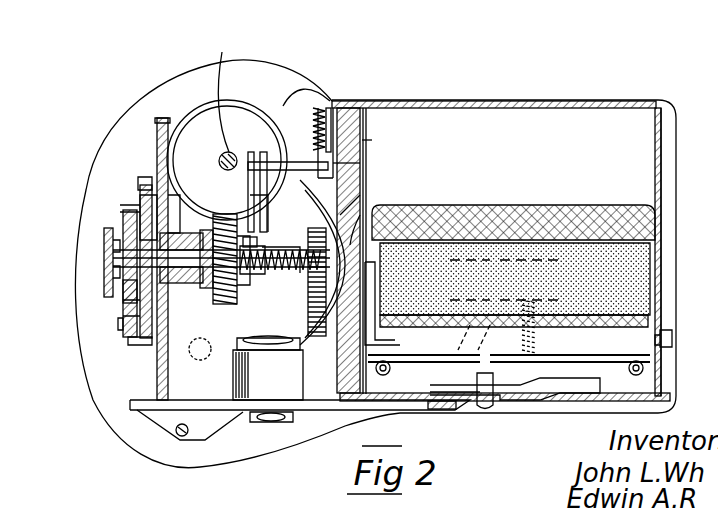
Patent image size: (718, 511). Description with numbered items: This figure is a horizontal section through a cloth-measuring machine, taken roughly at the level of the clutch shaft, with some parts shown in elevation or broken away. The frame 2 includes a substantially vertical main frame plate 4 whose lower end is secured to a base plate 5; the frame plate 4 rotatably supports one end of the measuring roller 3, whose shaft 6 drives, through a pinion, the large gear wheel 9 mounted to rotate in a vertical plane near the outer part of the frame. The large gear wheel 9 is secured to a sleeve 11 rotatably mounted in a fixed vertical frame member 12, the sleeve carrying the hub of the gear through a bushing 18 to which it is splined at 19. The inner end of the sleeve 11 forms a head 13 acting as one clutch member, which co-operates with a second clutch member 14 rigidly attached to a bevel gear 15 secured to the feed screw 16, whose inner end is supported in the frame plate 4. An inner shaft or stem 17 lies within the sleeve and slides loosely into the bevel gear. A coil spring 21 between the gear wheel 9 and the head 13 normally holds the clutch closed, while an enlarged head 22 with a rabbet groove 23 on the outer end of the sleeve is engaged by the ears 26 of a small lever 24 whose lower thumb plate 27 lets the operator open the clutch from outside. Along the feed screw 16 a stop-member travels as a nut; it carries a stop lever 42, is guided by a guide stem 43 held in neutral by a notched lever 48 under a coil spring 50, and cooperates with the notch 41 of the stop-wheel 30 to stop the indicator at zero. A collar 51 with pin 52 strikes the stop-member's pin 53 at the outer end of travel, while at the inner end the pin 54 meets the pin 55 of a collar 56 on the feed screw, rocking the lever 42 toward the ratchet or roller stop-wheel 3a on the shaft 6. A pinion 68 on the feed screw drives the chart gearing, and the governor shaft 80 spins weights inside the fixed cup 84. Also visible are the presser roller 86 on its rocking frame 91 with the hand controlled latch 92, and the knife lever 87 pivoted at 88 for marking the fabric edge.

The frame 2 is at (663, 200).
The measuring roller 3 is at (525, 212).
The ratchet wheel or roller stop-wheel 3a is at (378, 335).
The main frame plate 4 is at (350, 152).
The base plate 5 is at (210, 465).
The shaft 6 is at (290, 271).
The large gear wheel 9 is at (162, 118).
The sleeve 11 is at (178, 233).
The fixed vertical frame member 12 is at (140, 190).
The head 13 is at (219, 163).
The clutch member 14 is at (232, 170).
The bevel gear 15 is at (226, 225).
The feed screw 16 is at (305, 282).
The inner shaft or stem 17 is at (127, 300).
The bushing 18 is at (143, 178).
The spline 19 is at (135, 337).
The coil spring 21 is at (190, 300).
The enlarged head 22 is at (105, 232).
The rabbet groove 23 is at (125, 212).
The lever 24 is at (157, 376).
The ears 26 is at (128, 320).
The thumb plate 27 is at (104, 262).
The stop-wheel 30 is at (222, 338).
The notch 41 is at (318, 128).
The stop lever 42 is at (262, 218).
The guide stem 43 is at (281, 108).
The lever 48 is at (335, 165).
The coil spring 50 is at (362, 143).
The collar 51 is at (238, 300).
The pin 52 is at (263, 232).
The pin 53 is at (282, 272).
The pin 54 is at (268, 243).
The pin 55 is at (316, 228).
The collar 56 is at (345, 215).
The pinion 68 is at (350, 245).
The governor shaft 80 is at (218, 92).
The fixed cup 84 is at (228, 103).
The presser roller 86 is at (515, 279).
The knife lever 87 is at (333, 410).
The pivot 88 is at (268, 368).
The rocking frame 91 is at (625, 338).
The hand controlled latch 92 is at (555, 400).